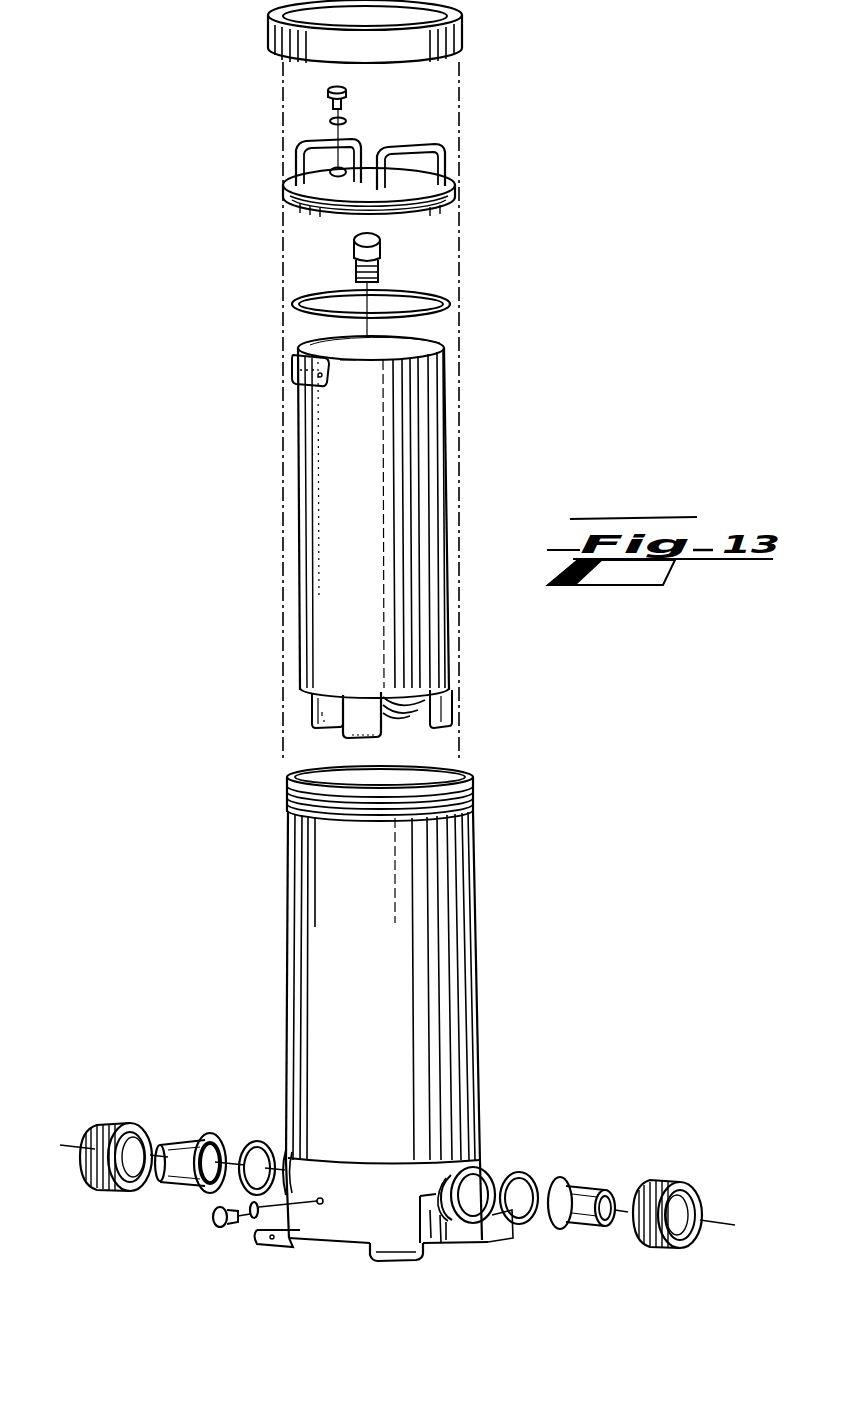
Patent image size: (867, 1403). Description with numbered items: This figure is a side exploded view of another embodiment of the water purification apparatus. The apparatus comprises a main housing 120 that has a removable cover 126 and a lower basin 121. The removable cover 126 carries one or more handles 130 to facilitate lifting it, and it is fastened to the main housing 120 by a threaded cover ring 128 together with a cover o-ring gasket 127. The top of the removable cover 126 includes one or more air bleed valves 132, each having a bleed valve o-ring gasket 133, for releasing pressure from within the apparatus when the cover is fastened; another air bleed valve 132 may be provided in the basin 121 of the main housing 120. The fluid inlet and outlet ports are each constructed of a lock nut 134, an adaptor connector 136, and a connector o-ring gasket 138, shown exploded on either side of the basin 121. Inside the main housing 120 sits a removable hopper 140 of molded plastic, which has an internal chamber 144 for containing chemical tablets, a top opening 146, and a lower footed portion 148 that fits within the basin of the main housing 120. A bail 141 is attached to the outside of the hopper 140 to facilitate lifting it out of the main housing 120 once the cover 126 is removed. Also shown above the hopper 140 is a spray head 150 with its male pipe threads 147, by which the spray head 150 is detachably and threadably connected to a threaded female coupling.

The main housing 120 is at (478, 950).
The lower basin 121 is at (360, 1230).
The removable cover 126 is at (287, 198).
The cover o-ring gasket 127 is at (452, 297).
The threaded cover ring 128 is at (463, 32).
The handle 130 is at (447, 157).
The air bleed valve 132 is at (327, 94).
The bleed valve o-ring gasket 133 is at (350, 117).
The lock nut 134 is at (109, 1108).
The adaptor connector 136 is at (195, 1118).
The connector o-ring gasket 138 is at (263, 1130).
The removable hopper 140 is at (300, 525).
The bail 141 is at (293, 364).
The internal chamber 144 is at (418, 337).
The top opening 146 is at (347, 363).
The male pipe threads 147 is at (350, 273).
The lower footed portion 148 is at (460, 700).
The spray head 150 is at (410, 267).